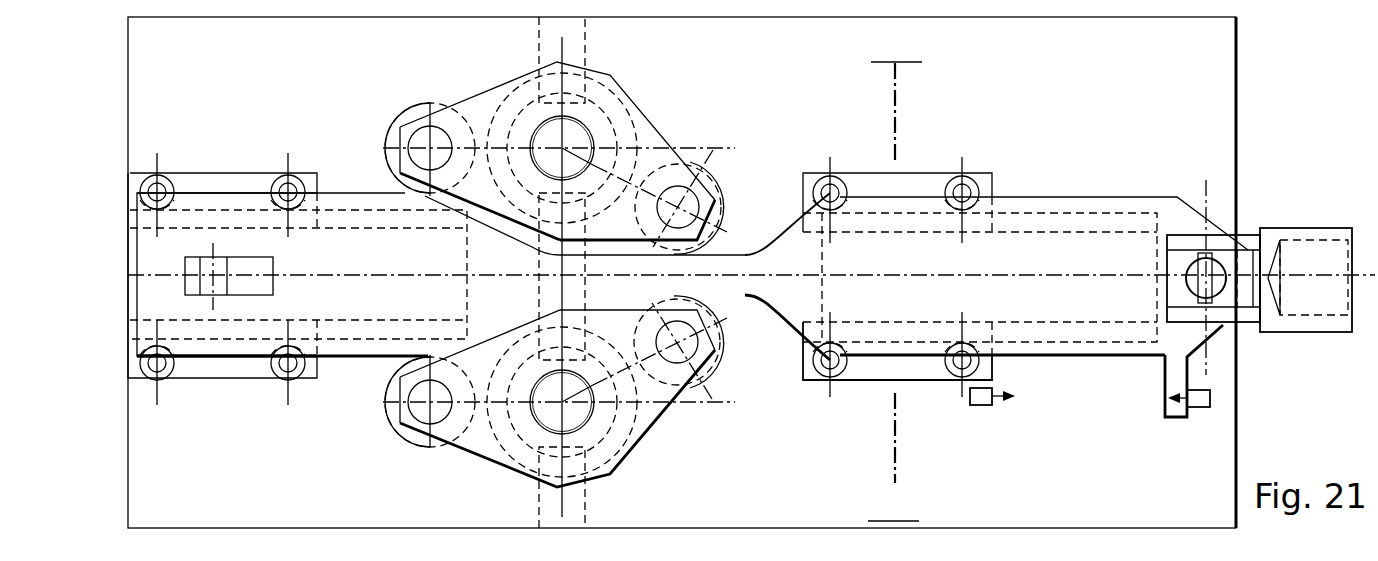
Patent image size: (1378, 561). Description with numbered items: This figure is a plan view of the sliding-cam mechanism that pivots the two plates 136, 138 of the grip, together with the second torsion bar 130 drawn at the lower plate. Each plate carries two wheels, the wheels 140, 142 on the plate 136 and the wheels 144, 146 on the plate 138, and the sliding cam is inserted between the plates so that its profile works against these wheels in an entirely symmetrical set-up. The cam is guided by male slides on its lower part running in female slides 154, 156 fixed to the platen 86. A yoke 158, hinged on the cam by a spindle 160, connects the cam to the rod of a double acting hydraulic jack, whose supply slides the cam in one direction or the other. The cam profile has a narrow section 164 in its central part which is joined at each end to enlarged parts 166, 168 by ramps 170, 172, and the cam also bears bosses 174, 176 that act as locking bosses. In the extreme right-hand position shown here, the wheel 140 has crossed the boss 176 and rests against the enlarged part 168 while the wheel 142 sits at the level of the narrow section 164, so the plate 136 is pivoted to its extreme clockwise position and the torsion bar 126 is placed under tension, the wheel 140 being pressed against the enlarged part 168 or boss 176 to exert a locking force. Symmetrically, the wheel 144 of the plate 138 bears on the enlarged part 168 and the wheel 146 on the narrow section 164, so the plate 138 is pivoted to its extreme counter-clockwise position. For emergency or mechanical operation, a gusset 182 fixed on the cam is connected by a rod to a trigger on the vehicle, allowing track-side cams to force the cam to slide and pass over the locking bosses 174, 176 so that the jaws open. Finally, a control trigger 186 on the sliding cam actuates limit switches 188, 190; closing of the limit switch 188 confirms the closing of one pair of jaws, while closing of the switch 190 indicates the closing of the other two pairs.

The platen 86 is at (1167, 64).
The torsion bar 126 is at (545, 135).
The lower cam hub 130 is at (577, 413).
The plate 136 is at (643, 127).
The plate 138 is at (657, 403).
The wheel 140 is at (405, 112).
The wheel 142 is at (700, 165).
The wheel 144 is at (413, 440).
The wheel 146 is at (715, 368).
The female slide 154 is at (935, 178).
The female slide 156 is at (193, 172).
The yoke 158 is at (1285, 228).
The spindle 160 is at (1214, 291).
The narrow section 164 is at (750, 312).
The enlarged part 166 is at (1052, 175).
The enlarged part 168 is at (343, 190).
The ramp 170 is at (770, 225).
The ramp 172 is at (507, 232).
The boss 174 is at (845, 175).
The boss 176 is at (431, 200).
The gusset 182 is at (243, 283).
The control trigger 186 is at (1170, 395).
The limit switch 188 is at (1203, 409).
The limit switch 190 is at (977, 407).